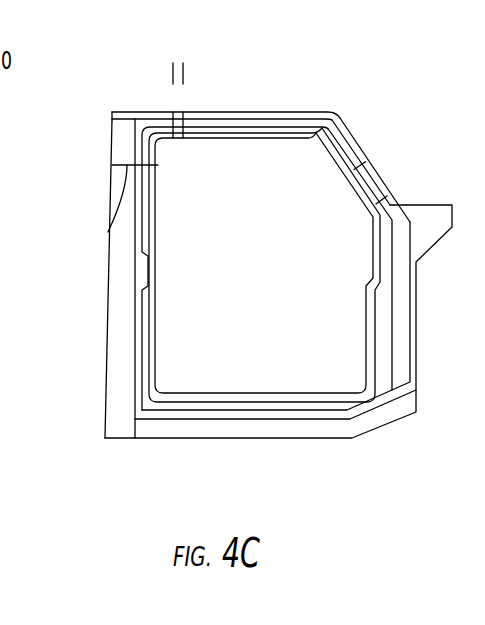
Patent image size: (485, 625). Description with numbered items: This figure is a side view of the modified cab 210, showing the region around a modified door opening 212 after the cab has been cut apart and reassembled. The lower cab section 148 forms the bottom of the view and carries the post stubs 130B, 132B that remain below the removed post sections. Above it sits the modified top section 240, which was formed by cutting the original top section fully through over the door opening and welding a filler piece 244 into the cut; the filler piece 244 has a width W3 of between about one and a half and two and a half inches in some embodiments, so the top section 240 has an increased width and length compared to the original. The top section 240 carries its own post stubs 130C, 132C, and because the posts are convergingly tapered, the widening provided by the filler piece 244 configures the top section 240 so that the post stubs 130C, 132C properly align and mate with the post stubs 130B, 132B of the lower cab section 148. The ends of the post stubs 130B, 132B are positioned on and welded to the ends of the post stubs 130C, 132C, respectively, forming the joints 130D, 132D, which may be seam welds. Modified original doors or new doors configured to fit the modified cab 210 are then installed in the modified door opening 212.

The lower cab section 148 is at (97, 373).
The joint 130D is at (110, 230).
The modified top section 240 is at (105, 116).
The post stub 130C is at (351, 140).
The post stub 130B is at (373, 175).
The modified cab 210 is at (353, 90).
The modified door opening 212 is at (228, 393).
The post stub 132C is at (122, 153).
The post stub 132B is at (118, 176).
The joint 132D is at (373, 175).
The filler piece 244 is at (178, 138).
The width W3 is at (150, 73).